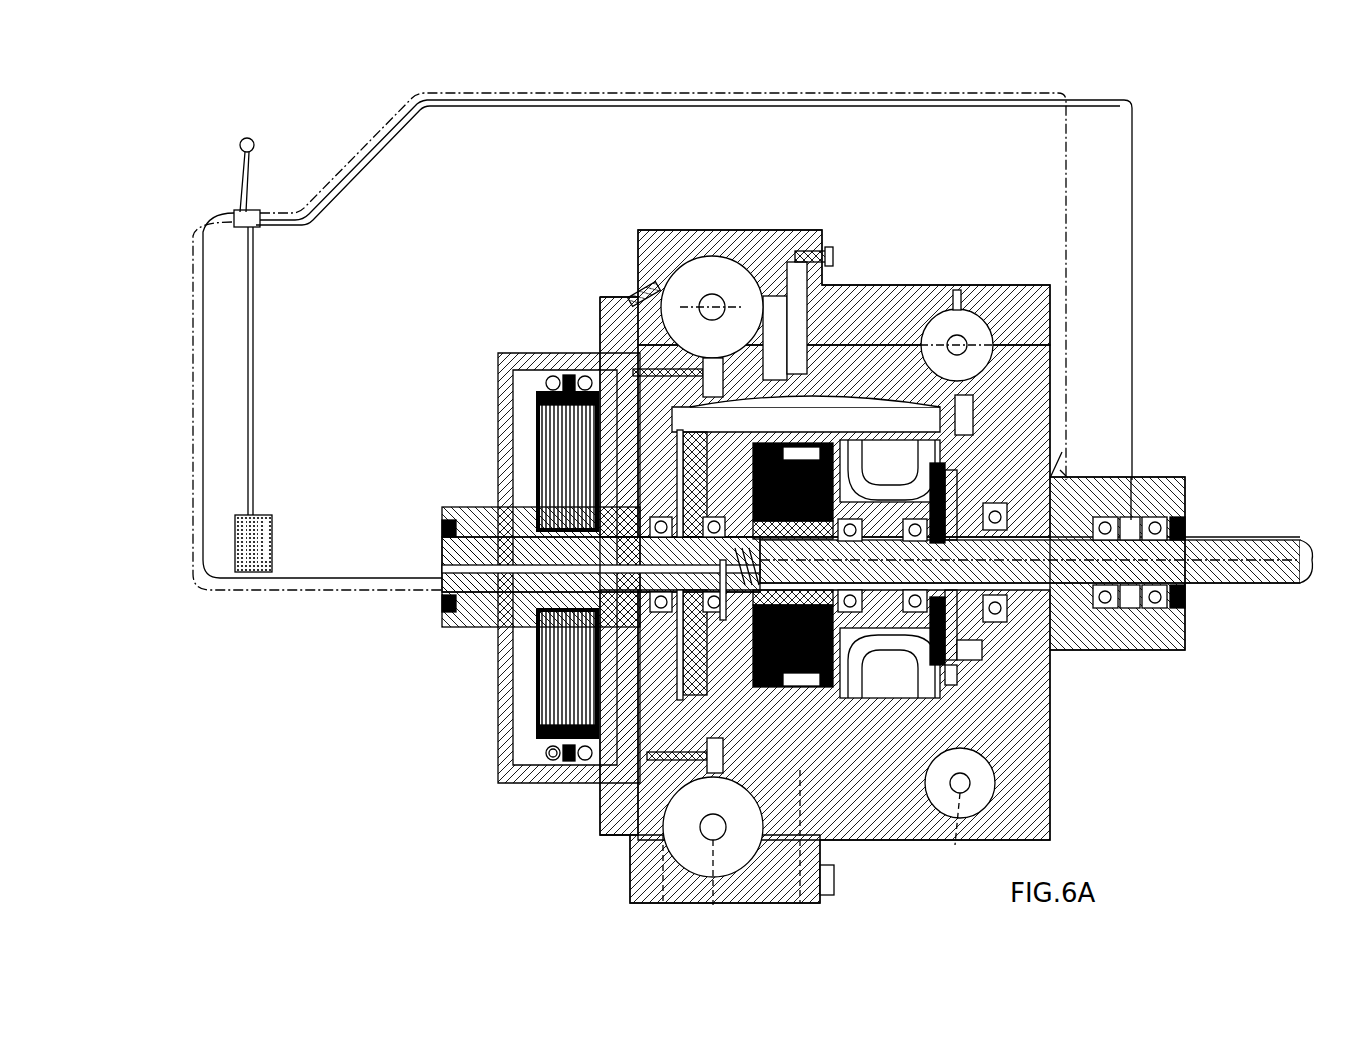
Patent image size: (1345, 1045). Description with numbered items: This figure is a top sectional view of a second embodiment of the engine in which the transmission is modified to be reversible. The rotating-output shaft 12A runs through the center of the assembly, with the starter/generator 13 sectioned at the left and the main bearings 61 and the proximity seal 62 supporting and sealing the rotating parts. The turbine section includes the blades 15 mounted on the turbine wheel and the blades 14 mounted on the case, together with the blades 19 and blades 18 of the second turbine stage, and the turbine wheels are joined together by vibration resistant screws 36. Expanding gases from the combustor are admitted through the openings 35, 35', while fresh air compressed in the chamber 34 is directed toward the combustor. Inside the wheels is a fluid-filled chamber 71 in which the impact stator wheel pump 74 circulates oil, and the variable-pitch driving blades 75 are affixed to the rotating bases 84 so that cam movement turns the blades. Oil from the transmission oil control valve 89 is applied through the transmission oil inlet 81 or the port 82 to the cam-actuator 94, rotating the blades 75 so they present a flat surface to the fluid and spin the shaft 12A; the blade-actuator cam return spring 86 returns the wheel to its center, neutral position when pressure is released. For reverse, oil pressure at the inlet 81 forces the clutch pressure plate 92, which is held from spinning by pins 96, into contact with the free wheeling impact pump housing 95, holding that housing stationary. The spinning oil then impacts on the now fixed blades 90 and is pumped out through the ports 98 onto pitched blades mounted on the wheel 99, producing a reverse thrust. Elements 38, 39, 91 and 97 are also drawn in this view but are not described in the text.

The rotating-output shaft 12A is at (1237, 575).
The starter/generator 13 is at (553, 427).
The blades 14 is at (700, 262).
The blades 15 is at (718, 333).
The blades 18 is at (950, 327).
The blades 19 is at (1000, 337).
The chamber 34 is at (615, 230).
The opening 35 is at (549, 875).
The opening 35' is at (594, 524).
The vibration resistant screws 36 is at (828, 255).
The bearing housing 38 is at (1040, 327).
The bolt 39 is at (960, 340).
The main bearings 61 is at (707, 533).
The proximity seal 62 is at (700, 330).
The chamber 71 is at (770, 410).
The impact stator wheel pump 74 is at (680, 697).
The variable-pitch driving blades 75 is at (800, 405).
The transmission oil inlet 81 is at (1065, 472).
The port 82 is at (1137, 477).
The rotating bases 84 is at (790, 433).
The blade-actuator cam return spring 86 is at (755, 525).
The transmission oil control valve 89 is at (262, 222).
The blades 90 is at (897, 412).
The clutch plate 91 is at (935, 658).
The clutch pressure plate 92 is at (937, 683).
The cam-actuator 94 is at (740, 630).
The free wheeling impact pump housing 95 is at (920, 688).
The pins 96 is at (953, 473).
The bearing ball 97 is at (553, 753).
The ports 98 is at (1040, 500).
The wheel 99 is at (700, 585).